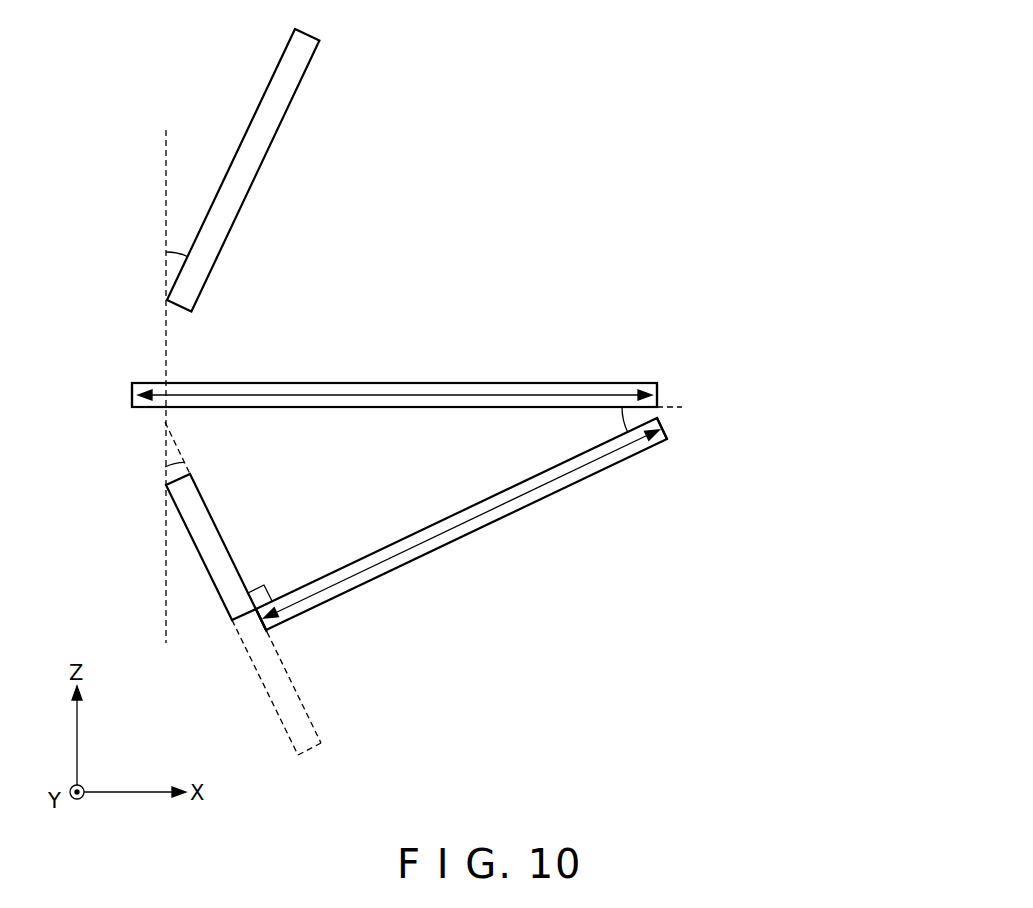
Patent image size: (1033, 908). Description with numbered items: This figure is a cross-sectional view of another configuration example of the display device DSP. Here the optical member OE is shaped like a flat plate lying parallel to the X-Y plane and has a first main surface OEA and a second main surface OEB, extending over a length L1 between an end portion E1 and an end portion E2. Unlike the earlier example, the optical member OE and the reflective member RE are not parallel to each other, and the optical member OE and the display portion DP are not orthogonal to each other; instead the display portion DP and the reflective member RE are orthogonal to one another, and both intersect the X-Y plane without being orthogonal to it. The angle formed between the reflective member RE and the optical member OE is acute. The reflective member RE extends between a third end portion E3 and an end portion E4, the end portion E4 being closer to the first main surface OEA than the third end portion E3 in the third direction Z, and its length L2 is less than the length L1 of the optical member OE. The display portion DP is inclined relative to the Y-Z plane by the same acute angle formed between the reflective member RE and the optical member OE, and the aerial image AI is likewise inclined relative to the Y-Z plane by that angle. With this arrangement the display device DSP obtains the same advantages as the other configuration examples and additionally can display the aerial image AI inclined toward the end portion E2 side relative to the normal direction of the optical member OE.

The display device DSP is at (766, 400).
The aerial image AI is at (253, 148).
The optical member OE is at (551, 390).
The first main surface OEA is at (378, 418).
The second main surface OEB is at (379, 372).
The end portion E1 is at (132, 390).
The end portion E2 is at (657, 390).
The length L1 is at (486, 392).
The display portion DP is at (193, 514).
The reflective member RE is at (470, 525).
The third end portion E3 is at (258, 616).
The end portion E4 is at (667, 433).
The length L2 is at (556, 486).